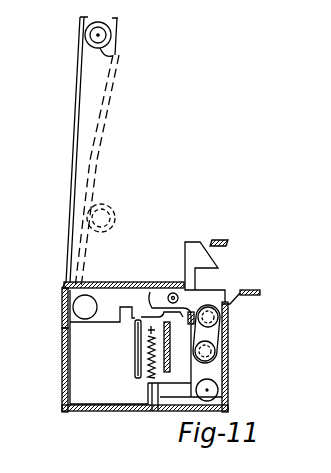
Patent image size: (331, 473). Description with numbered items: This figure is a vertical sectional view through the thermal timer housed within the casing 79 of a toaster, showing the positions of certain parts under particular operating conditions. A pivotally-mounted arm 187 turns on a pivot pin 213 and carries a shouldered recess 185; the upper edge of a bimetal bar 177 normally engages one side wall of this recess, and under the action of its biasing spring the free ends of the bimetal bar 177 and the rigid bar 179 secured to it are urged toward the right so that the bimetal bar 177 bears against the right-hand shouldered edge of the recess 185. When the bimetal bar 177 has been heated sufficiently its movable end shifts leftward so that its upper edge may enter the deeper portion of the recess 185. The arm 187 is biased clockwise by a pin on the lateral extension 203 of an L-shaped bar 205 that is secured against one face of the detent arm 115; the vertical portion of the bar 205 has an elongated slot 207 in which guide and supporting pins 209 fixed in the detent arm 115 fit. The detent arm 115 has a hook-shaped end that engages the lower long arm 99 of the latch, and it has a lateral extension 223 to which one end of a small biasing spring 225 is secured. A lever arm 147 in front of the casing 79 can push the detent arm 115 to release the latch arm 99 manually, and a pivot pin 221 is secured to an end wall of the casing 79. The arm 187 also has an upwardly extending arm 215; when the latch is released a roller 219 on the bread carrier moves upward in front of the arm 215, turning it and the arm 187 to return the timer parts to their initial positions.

The upwardly extending arm 215 is at (79, 73).
The roller 219 is at (110, 55).
The pivotally-mounted arm 187 is at (112, 291).
The pivot pin 213 is at (64, 322).
The casing 79 is at (62, 377).
The shouldered recess 185 is at (128, 320).
The bimetal bar 177 is at (135, 354).
The biasing spring 225 is at (150, 378).
The rigid bar 179 is at (152, 383).
The lateral extension 223 is at (152, 403).
The lateral extension 203 is at (187, 286).
The detent arm 115 is at (193, 262).
The lower long arm 99 is at (224, 238).
The lever arm 147 is at (251, 291).
The guide and supporting pins 209 is at (234, 322).
The elongated slot 207 is at (231, 327).
The bar of substantially L-shape 205 is at (231, 340).
The pivot pin 221 is at (224, 389).